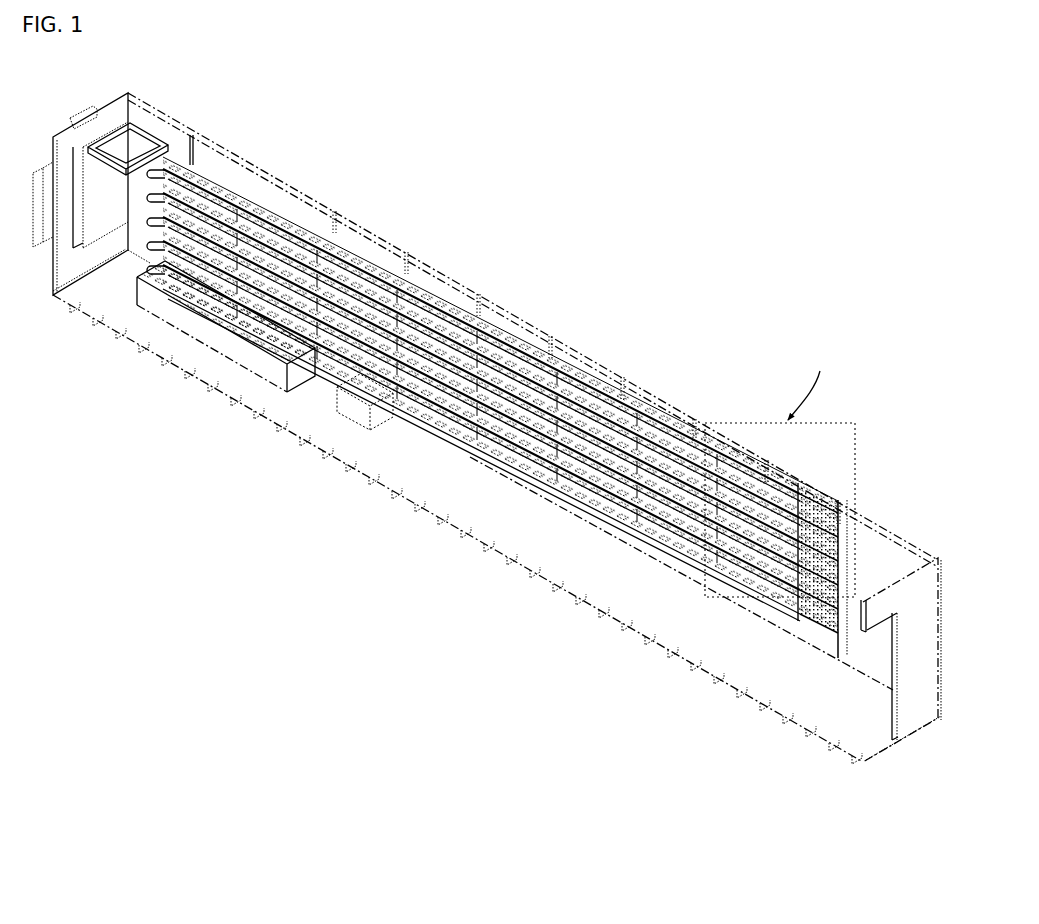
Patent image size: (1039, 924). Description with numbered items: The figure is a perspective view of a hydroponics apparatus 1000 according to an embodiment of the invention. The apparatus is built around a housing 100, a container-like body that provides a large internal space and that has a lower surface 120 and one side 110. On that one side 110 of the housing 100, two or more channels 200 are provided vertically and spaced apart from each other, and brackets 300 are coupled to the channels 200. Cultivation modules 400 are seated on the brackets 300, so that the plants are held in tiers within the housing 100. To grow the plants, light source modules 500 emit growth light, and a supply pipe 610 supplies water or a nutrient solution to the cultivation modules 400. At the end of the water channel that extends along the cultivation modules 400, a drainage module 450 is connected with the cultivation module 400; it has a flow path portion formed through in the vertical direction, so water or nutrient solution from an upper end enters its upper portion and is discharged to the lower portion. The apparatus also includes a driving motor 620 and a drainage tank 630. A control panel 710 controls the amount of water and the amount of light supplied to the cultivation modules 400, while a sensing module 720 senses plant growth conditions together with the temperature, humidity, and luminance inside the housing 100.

The hydroponics apparatus 1000 is at (504, 195).
The housing 100 is at (541, 318).
The one side 110 is at (892, 537).
The lower surface 120 is at (650, 620).
The channels 200 is at (837, 652).
The brackets 300 is at (722, 600).
The cultivation modules 400 is at (266, 196).
The drainage module 450 is at (185, 156).
The light source modules 500 is at (325, 375).
The supply pipe 610 is at (843, 622).
The driving motor 620 is at (363, 422).
The drainage tank 630 is at (220, 345).
The control panel 710 is at (103, 222).
The sensing module 720 is at (137, 138).